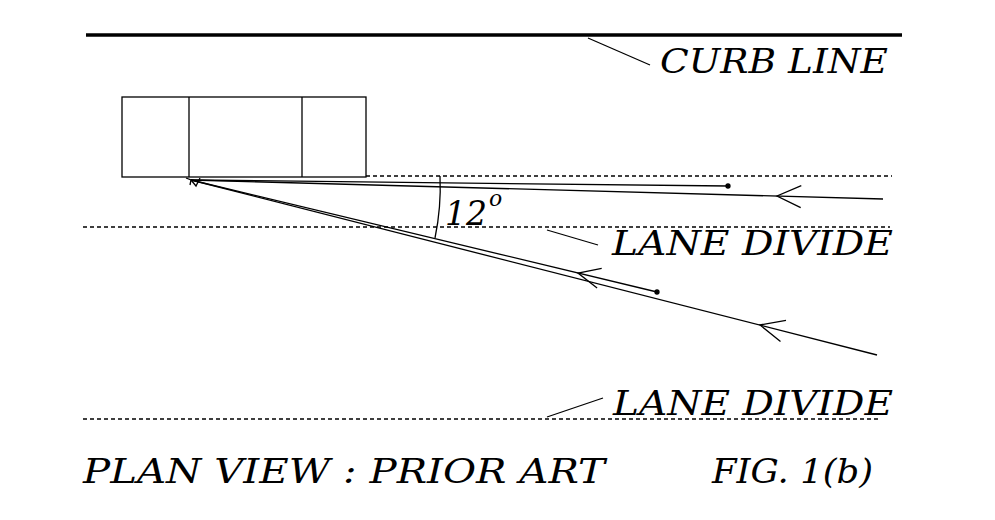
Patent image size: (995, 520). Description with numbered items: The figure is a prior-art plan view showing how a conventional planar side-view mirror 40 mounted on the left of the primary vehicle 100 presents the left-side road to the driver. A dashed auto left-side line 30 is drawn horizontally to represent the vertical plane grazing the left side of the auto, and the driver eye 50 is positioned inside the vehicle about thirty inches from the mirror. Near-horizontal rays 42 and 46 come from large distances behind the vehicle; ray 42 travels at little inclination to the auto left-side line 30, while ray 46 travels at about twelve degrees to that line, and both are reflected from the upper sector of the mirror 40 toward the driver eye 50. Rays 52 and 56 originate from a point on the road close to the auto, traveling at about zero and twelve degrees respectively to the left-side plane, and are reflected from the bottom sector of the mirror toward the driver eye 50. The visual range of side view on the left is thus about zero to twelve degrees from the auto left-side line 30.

The primary vehicle 100 is at (244, 137).
The driver eye 50 is at (191, 180).
The mirror 40 is at (191, 180).
The auto left-side line 30 is at (498, 176).
The ray 52 is at (653, 183).
The near-horizontal ray 42 is at (817, 197).
The ray 56 is at (678, 268).
The near-horizontal ray 46 is at (827, 340).